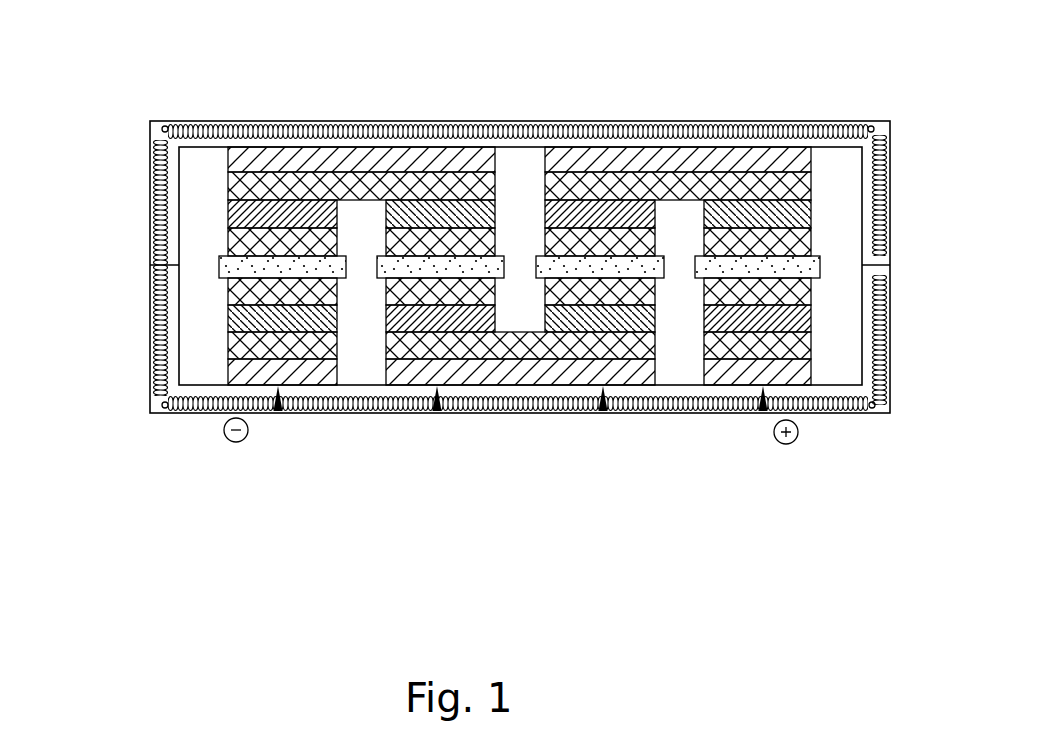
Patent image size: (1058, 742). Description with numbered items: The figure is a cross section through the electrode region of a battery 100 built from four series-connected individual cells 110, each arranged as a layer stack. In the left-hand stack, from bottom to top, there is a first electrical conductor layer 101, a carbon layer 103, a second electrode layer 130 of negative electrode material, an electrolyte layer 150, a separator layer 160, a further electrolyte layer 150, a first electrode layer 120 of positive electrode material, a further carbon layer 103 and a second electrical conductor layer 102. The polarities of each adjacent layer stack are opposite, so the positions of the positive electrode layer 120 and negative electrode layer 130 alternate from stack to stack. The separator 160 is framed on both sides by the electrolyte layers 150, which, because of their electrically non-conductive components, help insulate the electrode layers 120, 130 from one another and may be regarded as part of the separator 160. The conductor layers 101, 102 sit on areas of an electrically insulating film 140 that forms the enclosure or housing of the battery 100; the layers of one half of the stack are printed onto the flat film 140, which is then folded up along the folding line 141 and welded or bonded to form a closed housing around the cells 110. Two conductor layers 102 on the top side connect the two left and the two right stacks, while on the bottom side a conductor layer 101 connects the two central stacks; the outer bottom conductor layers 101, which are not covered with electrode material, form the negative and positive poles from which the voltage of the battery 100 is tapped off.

The battery 100 is at (777, 98).
The first electrical conductor layer 101 is at (265, 382).
The second electrical conductor layer 102 is at (342, 169).
The carbon layer 103 is at (265, 197).
The individual cell 110 is at (278, 411).
The first electrode layer 120 is at (265, 225).
The second electrode layer 130 is at (426, 225).
The electrically insulating film 140 is at (319, 146).
The folding line 141 is at (150, 266).
The electrolyte layer 150 is at (265, 253).
The separator layer 160 is at (265, 276).